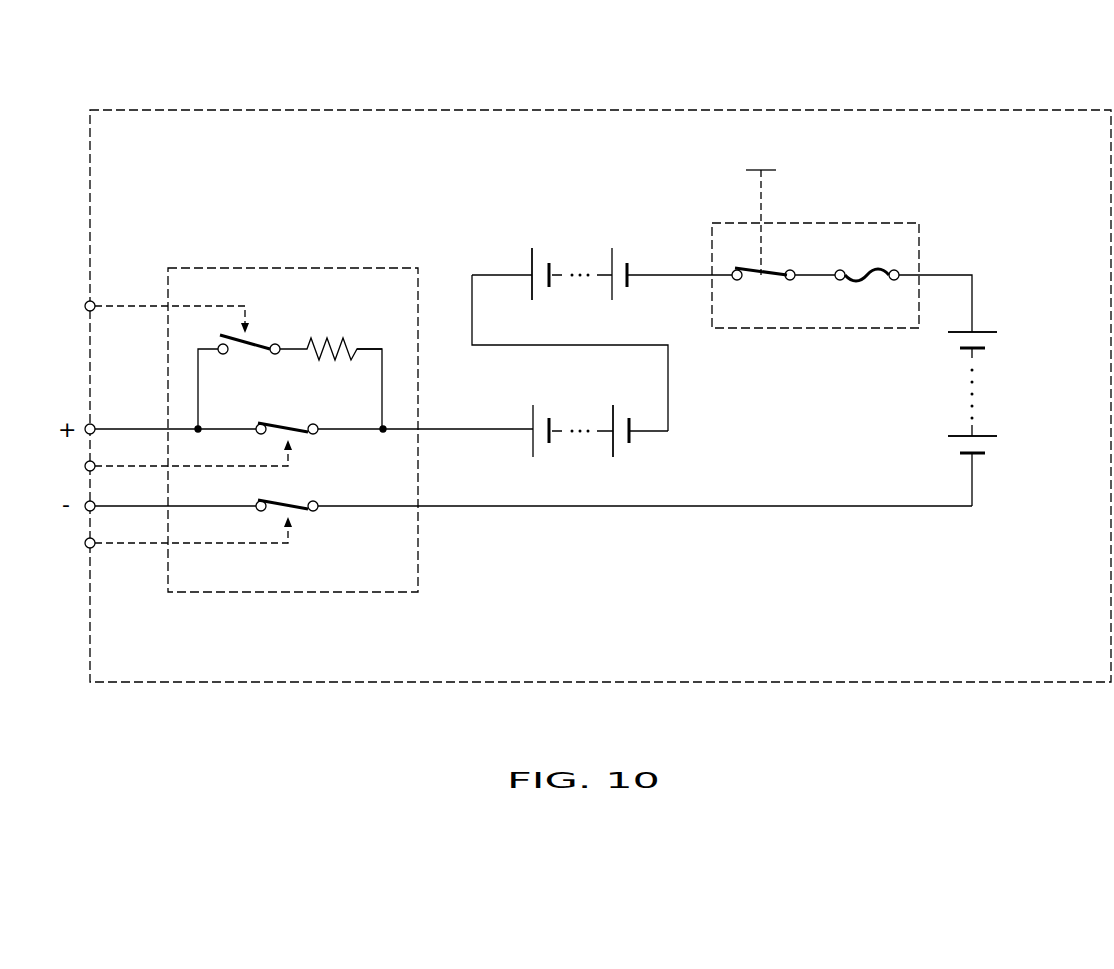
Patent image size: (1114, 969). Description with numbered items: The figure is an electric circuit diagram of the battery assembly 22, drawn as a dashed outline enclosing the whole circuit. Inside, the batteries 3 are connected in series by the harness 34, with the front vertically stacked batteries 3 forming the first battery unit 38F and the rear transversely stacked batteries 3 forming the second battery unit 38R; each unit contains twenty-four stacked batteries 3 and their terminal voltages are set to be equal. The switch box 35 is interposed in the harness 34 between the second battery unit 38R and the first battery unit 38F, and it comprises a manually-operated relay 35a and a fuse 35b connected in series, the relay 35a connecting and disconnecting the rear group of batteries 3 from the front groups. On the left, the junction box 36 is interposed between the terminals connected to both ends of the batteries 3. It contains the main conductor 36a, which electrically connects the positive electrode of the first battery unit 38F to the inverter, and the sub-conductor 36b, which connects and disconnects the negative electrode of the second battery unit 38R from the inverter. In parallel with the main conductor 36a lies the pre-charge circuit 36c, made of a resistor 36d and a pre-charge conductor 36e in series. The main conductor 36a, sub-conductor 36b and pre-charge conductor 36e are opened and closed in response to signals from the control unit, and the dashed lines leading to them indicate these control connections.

The battery assembly 22 is at (795, 110).
The junction box 36 is at (206, 268).
The main conductor 36a is at (305, 447).
The sub-conductor 36b is at (305, 522).
The pre-charge circuit 36c is at (198, 385).
The resistor 36d is at (339, 330).
The pre-charge conductor 36e is at (264, 330).
The harness 34 is at (677, 278).
The first battery unit 38F is at (632, 244).
The second battery unit 38R is at (1010, 332).
The battery 3 is at (532, 258).
The switch box 35 is at (878, 223).
The manually-operated relay 35a is at (759, 290).
The fuse 35b is at (867, 290).